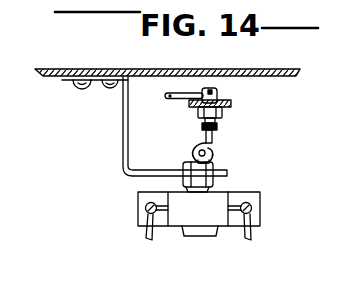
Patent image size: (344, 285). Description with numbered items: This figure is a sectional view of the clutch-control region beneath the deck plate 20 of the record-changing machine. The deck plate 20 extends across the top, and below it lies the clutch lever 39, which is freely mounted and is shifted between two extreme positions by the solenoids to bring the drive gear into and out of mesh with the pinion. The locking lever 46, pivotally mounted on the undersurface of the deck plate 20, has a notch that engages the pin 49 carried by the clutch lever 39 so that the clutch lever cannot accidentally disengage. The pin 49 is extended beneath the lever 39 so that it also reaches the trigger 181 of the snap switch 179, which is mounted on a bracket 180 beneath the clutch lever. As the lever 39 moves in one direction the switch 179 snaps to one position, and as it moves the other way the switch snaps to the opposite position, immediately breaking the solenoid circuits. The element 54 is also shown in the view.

The rod 54 is at (195, 15).
The deck plate 20 is at (297, 77).
The locking lever 46 is at (173, 99).
The pin 49 is at (218, 98).
The clutch lever 39 is at (233, 106).
The trigger 181 is at (194, 151).
The bracket 180 is at (122, 142).
The snap switch 179 is at (218, 200).